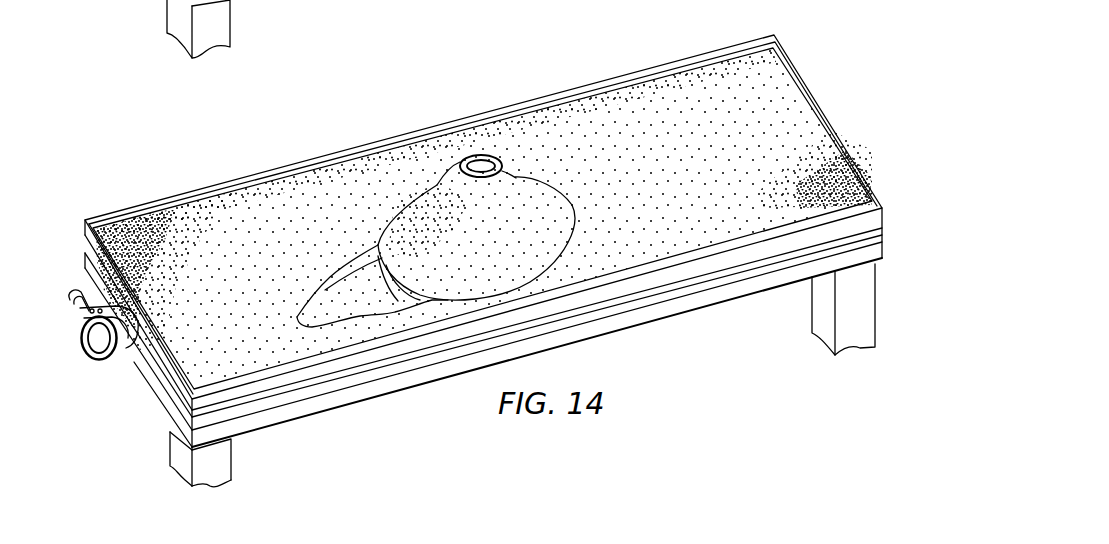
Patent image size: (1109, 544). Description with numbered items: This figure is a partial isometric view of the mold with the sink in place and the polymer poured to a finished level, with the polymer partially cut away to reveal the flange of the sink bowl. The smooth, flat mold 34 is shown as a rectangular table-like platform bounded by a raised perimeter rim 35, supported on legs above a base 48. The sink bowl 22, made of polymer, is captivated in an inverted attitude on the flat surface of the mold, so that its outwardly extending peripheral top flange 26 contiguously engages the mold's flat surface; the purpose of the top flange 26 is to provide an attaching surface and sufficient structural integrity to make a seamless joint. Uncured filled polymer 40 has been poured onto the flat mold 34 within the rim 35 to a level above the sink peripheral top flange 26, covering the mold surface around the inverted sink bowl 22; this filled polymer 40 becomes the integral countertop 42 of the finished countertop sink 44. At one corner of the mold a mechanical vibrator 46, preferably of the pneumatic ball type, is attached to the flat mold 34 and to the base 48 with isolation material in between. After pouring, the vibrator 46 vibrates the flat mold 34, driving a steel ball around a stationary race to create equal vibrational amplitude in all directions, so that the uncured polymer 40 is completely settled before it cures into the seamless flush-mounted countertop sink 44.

The sink bowl 22 is at (436, 183).
The peripheral top flange 26 is at (394, 300).
The flat mold 34 is at (333, 290).
The raised perimeter rim 35 is at (658, 68).
The filled polymer 40 is at (757, 95).
The integral countertop 42 is at (718, 230).
The countertop sink 44 is at (802, 140).
The mechanical vibrator 46 is at (104, 362).
The base 48 is at (612, 331).